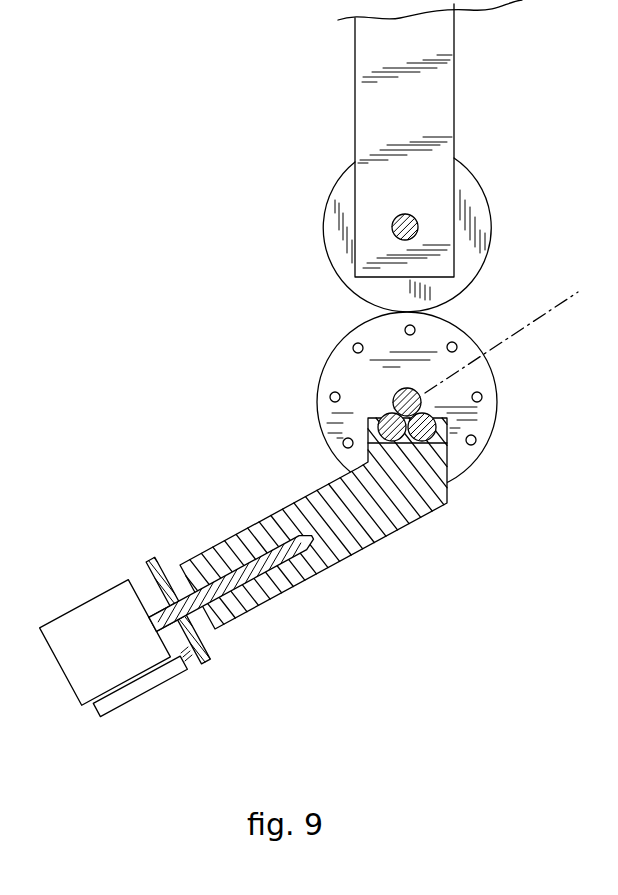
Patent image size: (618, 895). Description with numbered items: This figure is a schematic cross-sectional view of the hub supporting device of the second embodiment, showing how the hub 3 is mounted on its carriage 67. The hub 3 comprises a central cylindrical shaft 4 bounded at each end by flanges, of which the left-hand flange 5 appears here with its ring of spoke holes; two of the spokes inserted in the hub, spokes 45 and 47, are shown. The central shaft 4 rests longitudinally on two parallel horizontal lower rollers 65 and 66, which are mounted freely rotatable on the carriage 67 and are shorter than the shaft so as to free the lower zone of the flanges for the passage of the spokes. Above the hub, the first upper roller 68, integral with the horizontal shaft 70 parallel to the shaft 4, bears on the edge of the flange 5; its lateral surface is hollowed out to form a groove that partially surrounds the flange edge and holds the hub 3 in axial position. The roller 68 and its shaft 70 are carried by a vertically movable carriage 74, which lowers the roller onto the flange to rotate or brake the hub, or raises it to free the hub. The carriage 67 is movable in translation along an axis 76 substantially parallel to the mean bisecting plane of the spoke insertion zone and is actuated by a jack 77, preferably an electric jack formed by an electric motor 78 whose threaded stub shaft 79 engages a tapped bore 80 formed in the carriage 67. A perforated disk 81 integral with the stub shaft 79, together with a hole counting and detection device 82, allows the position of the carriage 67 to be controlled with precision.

The hub 3 is at (316, 382).
The central cylindrical shaft 4 is at (397, 392).
The flange 5 is at (358, 332).
The hole 45 is at (456, 345).
The hole 47 is at (481, 396).
The roller 65 is at (378, 432).
The roller 66 is at (448, 428).
The carriage 67 is at (432, 503).
The first upper roller 68 is at (335, 192).
The horizontal shaft 70 is at (392, 232).
The carriage 74 is at (372, 58).
The axis 76 is at (540, 318).
The jack 77 is at (112, 580).
The electric motor 78 is at (73, 617).
The stub shaft 79 is at (243, 563).
The tapped bore 80 is at (303, 545).
The perforated disk 81 is at (205, 640).
The hole counting and detection device 82 is at (150, 687).